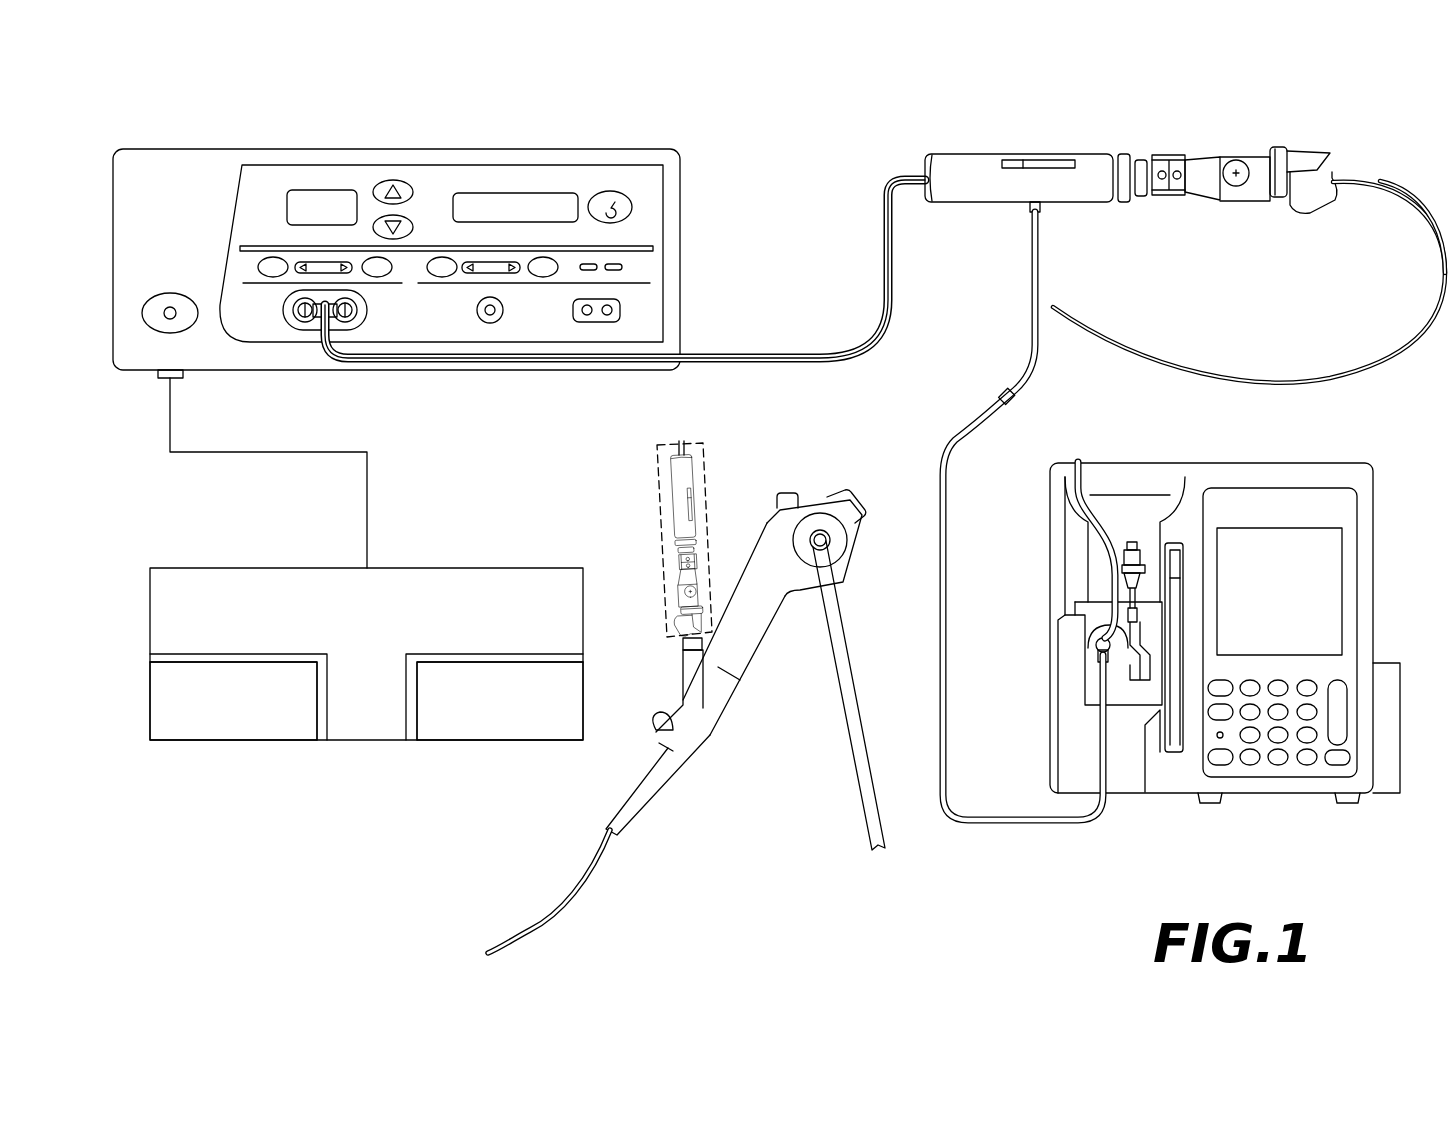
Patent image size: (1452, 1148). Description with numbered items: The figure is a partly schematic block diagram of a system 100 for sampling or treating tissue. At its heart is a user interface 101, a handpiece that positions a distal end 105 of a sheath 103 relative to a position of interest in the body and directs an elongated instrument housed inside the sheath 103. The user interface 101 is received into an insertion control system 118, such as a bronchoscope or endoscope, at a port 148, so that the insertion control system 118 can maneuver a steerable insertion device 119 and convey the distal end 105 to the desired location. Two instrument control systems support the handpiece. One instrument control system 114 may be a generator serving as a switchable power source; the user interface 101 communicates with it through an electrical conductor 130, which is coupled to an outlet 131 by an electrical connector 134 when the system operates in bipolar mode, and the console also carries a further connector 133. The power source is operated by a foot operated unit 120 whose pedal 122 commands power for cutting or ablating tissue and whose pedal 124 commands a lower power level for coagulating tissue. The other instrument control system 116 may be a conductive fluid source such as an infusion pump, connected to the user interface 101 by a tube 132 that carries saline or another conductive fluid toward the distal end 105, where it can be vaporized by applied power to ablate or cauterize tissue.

The system 100 is at (778, 88).
The user interface 101 is at (1092, 125).
The sheath 103 is at (1420, 200).
The distal end 105 is at (1077, 318).
The instrument control system 114 is at (400, 140).
The instrument control system 116 is at (1030, 531).
The insertion control system 118 is at (655, 786).
The insertion device 119 is at (549, 907).
The foot operated unit 120 is at (366, 589).
The pedal 122 is at (237, 717).
The pedal 124 is at (470, 717).
The electrical conductor 130 is at (748, 356).
The outlet 131 is at (312, 328).
The tube 132 is at (946, 438).
The connector port 133 is at (503, 323).
The electrical connector 134 is at (298, 328).
The port 148 is at (686, 644).